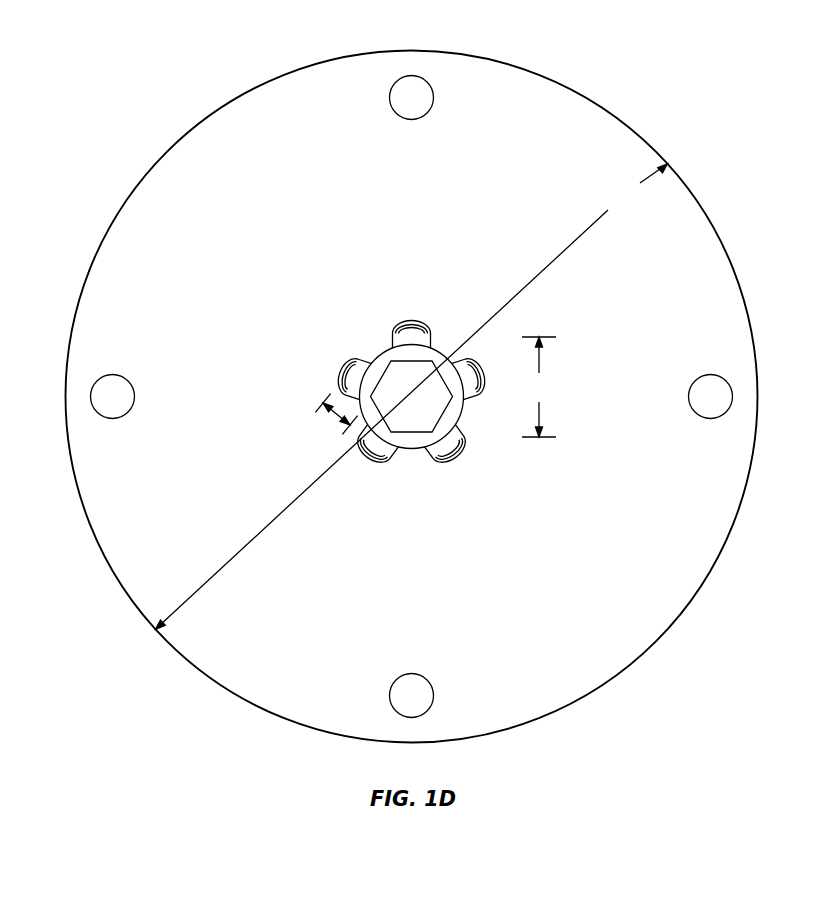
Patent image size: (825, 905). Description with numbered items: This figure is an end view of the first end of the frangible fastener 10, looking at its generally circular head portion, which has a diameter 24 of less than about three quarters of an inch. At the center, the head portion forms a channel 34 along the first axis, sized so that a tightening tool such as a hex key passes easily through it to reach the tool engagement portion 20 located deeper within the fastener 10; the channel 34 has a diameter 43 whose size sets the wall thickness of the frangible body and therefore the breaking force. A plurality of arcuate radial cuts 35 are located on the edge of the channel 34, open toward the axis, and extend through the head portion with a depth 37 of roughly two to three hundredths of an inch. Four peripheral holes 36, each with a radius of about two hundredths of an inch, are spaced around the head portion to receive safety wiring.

The frangible fastener 10 is at (736, 60).
The tool engagement portion 20 is at (405, 389).
The diameter 24 is at (412, 397).
The channel 34 is at (463, 416).
The arcuate radial cuts 35 is at (410, 318).
The peripheral holes 36 is at (411, 104).
The depth 37 is at (336, 414).
The diameter 43 is at (539, 387).